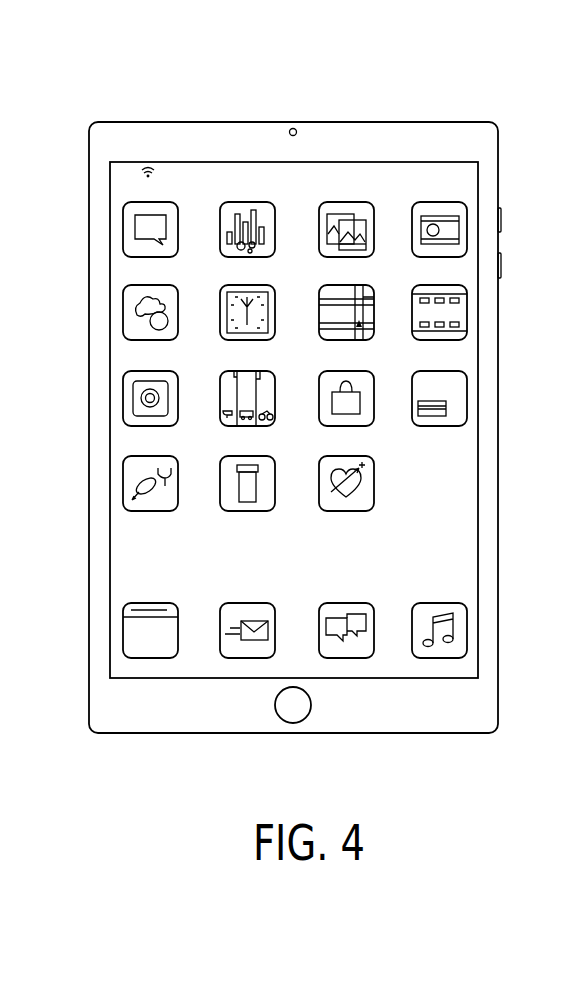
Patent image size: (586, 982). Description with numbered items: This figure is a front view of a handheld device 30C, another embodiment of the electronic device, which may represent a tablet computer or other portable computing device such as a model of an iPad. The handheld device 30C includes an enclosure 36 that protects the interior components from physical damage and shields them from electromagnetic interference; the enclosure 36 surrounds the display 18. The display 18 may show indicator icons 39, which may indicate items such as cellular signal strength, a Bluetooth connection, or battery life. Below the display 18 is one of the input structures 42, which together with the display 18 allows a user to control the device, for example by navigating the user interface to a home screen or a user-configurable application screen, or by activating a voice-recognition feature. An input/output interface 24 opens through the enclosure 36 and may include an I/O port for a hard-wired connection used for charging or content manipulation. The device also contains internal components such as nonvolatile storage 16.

The handheld device 30C is at (96, 78).
The nonvolatile storage 16 is at (167, 122).
The enclosure 36 is at (380, 122).
The display 18 is at (484, 478).
The indicator icons 39 is at (303, 214).
The input structures 42 is at (312, 705).
The input/output (I/O) interface 24 is at (293, 734).